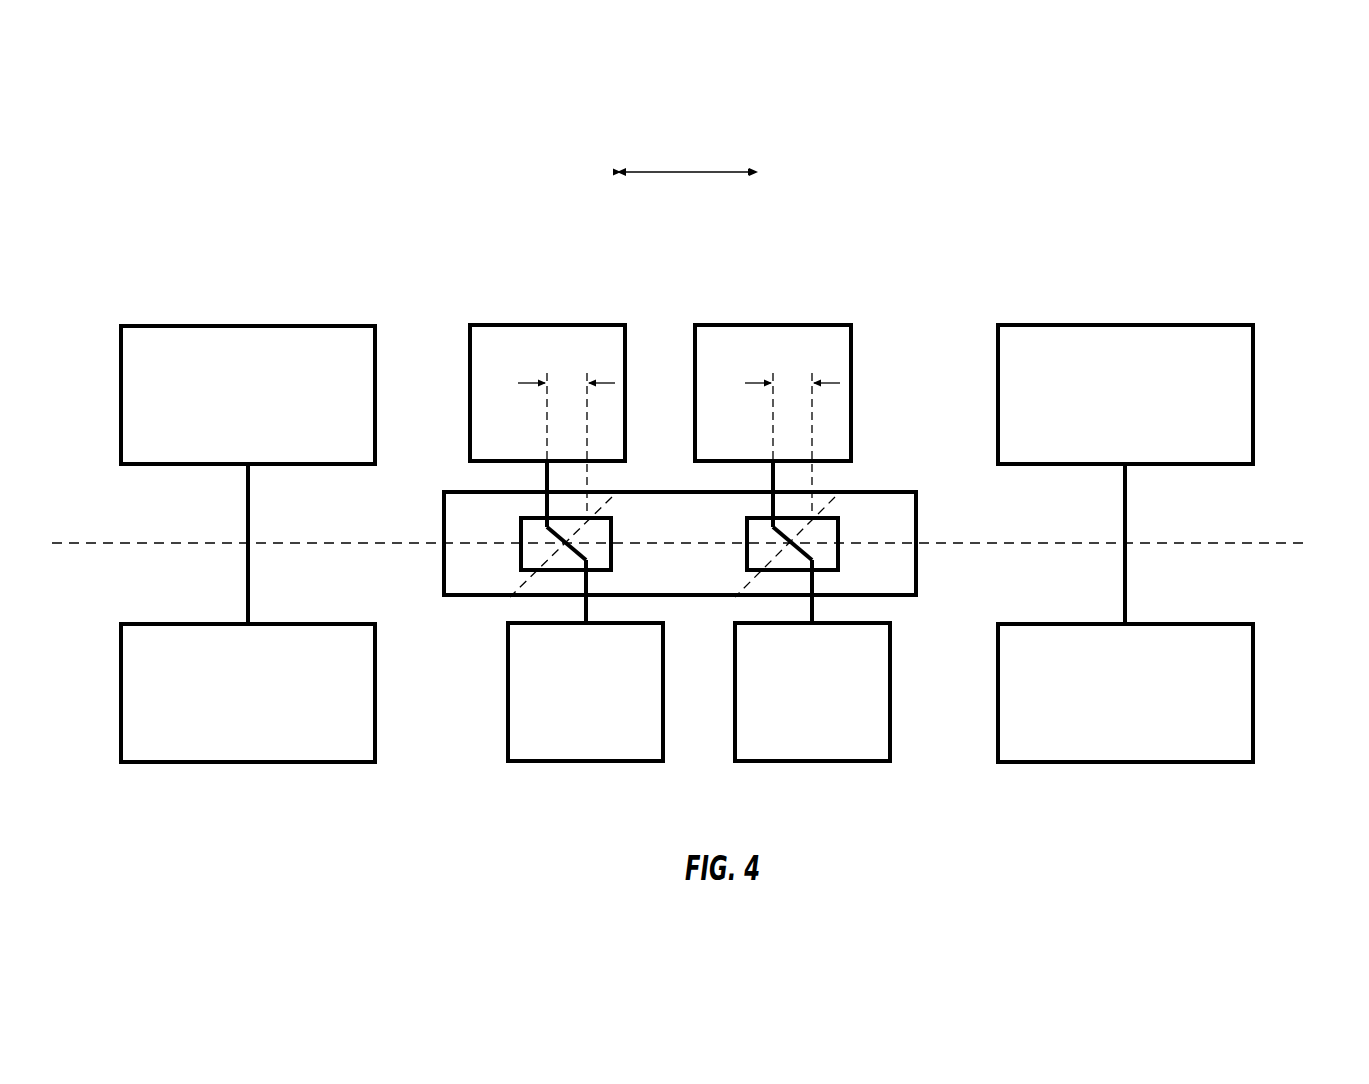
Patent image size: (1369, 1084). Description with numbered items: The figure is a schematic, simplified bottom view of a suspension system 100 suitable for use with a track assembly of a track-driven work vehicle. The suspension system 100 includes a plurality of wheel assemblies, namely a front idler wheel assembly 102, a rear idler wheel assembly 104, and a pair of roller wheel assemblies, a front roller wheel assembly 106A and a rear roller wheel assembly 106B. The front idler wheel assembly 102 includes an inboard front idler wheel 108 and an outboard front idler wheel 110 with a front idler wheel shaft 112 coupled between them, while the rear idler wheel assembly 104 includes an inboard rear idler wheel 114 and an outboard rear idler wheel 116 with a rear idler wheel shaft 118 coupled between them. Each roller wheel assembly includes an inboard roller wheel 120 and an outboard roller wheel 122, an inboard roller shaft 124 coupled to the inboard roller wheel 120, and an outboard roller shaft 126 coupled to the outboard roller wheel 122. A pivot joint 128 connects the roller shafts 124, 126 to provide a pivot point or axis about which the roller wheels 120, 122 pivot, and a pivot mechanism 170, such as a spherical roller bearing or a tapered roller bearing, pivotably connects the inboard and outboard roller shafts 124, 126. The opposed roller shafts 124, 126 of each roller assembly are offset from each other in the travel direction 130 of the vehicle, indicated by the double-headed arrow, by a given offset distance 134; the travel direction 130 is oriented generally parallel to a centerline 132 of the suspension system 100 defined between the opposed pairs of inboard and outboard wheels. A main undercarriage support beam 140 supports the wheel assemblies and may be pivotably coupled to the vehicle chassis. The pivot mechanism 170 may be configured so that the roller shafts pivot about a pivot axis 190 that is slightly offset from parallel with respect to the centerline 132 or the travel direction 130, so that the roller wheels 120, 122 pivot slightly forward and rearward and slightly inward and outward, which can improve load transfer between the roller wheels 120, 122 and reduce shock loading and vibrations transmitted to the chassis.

The suspension system 100 is at (1165, 175).
The front idler wheel assembly 102 is at (1262, 305).
The rear idler wheel assembly 104 is at (130, 275).
The front roller wheel assembly 106A is at (857, 290).
The rear roller wheel assembly 106B is at (470, 262).
The inboard front idler wheel 108 is at (1240, 398).
The outboard front idler wheel 110 is at (1240, 693).
The front idler wheel shaft 112 is at (1127, 517).
The inboard rear idler wheel 114 is at (135, 402).
The outboard rear idler wheel 116 is at (135, 700).
The rear idler wheel shaft 118 is at (248, 517).
The inboard roller wheel 120 is at (520, 333).
The outboard roller wheel 122 is at (572, 748).
The inboard roller shaft 124 is at (547, 500).
The outboard roller shaft 126 is at (582, 583).
The pivot joint 128 is at (510, 562).
The travel direction 130 is at (692, 172).
The centerline 132 is at (1275, 545).
The offset distance 134 is at (520, 383).
The main undercarriage support beam 140 is at (445, 520).
The pivot mechanism 170 is at (593, 577).
The pivot axis 190 is at (612, 497).